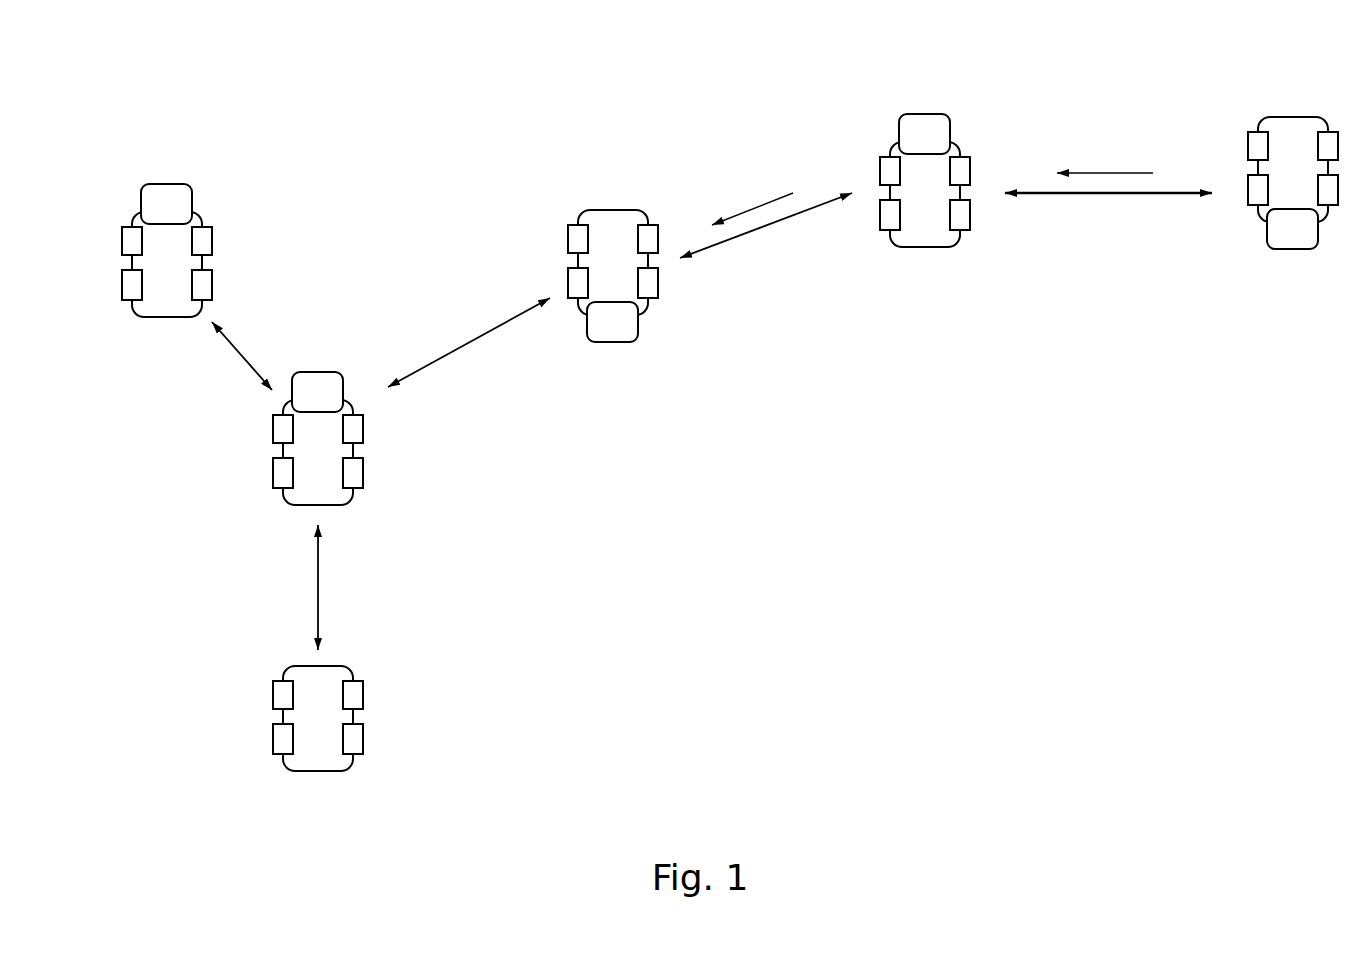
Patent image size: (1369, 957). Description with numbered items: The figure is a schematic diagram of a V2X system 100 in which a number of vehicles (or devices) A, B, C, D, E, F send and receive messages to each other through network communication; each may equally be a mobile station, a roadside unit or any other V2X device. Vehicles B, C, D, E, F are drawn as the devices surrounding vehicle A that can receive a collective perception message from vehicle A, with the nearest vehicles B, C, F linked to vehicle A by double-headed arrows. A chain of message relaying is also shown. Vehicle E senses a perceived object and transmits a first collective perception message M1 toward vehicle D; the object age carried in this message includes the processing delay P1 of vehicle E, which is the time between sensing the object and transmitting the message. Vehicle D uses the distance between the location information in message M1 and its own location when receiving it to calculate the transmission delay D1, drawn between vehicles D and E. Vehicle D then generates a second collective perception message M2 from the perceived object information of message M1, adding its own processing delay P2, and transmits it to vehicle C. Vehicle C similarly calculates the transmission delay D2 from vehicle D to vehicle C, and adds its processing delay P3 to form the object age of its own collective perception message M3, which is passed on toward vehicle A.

The V2X system 100 is at (131, 50).
The vehicle A is at (318, 438).
The vehicle B is at (167, 250).
The vehicle C is at (613, 276).
The vehicle D is at (925, 180).
The vehicle E is at (1293, 183).
The vehicle F is at (318, 718).
The processing delay P1 is at (1293, 164).
The processing delay P2 is at (925, 160).
The processing delay P3 is at (613, 256).
The collective perception message M1 is at (1109, 152).
The collective perception message M2 is at (747, 190).
The collective perception message M3 is at (469, 335).
The transmission delay D1 is at (1108, 213).
The transmission delay D2 is at (766, 230).